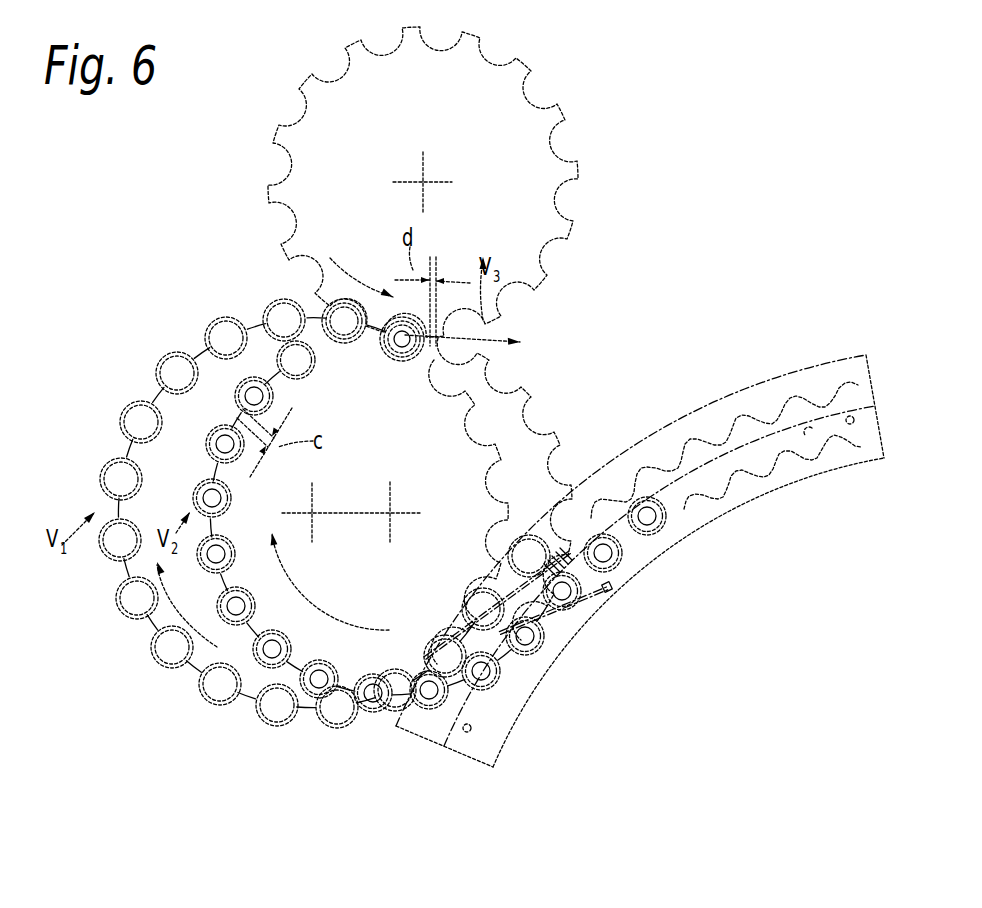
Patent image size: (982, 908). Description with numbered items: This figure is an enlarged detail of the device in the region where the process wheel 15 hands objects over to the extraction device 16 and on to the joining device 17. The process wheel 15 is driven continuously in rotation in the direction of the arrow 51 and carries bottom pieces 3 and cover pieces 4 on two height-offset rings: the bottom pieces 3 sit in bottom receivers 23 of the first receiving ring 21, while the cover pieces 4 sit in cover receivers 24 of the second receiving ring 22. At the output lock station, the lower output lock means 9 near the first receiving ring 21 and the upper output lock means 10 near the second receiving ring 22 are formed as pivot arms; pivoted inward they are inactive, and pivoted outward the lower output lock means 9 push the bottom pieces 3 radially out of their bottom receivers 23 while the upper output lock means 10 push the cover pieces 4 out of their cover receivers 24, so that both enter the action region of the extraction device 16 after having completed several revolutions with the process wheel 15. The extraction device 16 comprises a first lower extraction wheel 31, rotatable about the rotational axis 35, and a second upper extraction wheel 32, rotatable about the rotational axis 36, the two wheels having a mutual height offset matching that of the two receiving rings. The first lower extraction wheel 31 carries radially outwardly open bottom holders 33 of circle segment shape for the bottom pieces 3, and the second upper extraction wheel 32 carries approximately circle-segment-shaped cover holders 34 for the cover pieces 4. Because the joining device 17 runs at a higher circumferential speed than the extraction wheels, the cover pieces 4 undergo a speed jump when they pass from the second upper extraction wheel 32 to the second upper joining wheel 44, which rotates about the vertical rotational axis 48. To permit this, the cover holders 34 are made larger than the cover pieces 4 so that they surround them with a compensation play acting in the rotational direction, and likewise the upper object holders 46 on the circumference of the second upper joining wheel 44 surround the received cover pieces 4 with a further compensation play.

The bottom pieces 3 is at (177, 352).
The cover pieces 4 is at (224, 424).
The lower output lock means 9 is at (558, 624).
The upper output lock means 10 is at (600, 614).
The process wheel 15 is at (672, 732).
The extraction device 16 is at (123, 722).
The joining device 17 is at (585, 103).
The first receiving ring 21 is at (490, 703).
The second receiving ring 22 is at (500, 748).
The bottom receivers 23 is at (715, 480).
The cover receivers 24 is at (666, 528).
The first lower extraction wheel 31 is at (110, 460).
The second upper extraction wheel 32 is at (205, 480).
The bottom holders 33 is at (485, 425).
The cover holders 34 is at (542, 425).
The rotational axis 35 is at (318, 503).
The rotational axis 36 is at (398, 511).
The second upper joining wheel 44 is at (387, 139).
The upper object holders 46 is at (557, 250).
The rotational axis 48 is at (424, 176).
The arrow 51 is at (683, 683).